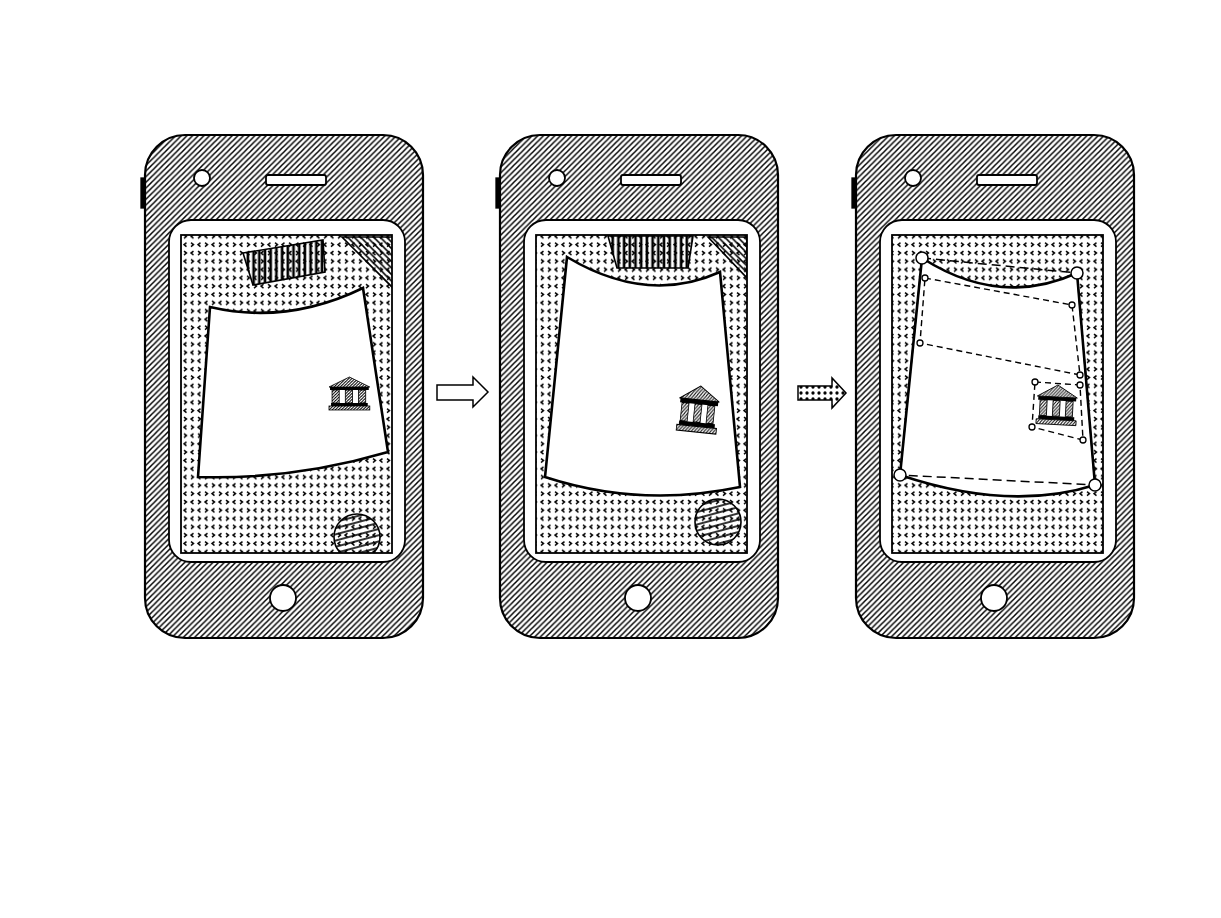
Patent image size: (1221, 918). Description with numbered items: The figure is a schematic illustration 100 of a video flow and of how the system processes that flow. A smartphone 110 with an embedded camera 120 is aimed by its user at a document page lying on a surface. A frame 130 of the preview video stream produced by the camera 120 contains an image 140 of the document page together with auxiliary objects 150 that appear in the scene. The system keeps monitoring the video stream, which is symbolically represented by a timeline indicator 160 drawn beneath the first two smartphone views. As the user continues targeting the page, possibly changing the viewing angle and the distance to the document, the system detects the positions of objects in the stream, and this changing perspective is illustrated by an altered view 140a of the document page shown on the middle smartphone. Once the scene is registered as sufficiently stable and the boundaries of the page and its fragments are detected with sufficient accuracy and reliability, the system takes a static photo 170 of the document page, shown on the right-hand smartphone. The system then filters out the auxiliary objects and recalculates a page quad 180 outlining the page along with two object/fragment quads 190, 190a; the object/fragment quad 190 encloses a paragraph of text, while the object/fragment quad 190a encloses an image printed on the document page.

The schematic illustration 100 is at (1172, 133).
The smartphone 110 is at (150, 152).
The embedded camera 120 is at (202, 183).
The frame 130 is at (197, 520).
The image of the document page 140 is at (202, 400).
The altered view of the document page 140a is at (557, 302).
The auxiliary objects 150 is at (240, 267).
The timeline indicator 160 is at (332, 702).
The static photo 170 is at (907, 292).
The page quad 180 is at (1082, 305).
The object/fragment quad 190 is at (1090, 272).
The object/fragment quad 190a is at (1088, 387).